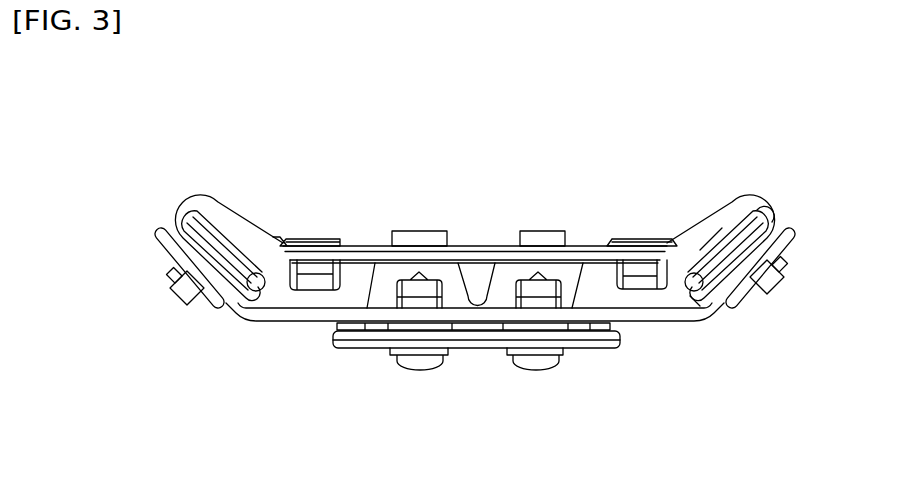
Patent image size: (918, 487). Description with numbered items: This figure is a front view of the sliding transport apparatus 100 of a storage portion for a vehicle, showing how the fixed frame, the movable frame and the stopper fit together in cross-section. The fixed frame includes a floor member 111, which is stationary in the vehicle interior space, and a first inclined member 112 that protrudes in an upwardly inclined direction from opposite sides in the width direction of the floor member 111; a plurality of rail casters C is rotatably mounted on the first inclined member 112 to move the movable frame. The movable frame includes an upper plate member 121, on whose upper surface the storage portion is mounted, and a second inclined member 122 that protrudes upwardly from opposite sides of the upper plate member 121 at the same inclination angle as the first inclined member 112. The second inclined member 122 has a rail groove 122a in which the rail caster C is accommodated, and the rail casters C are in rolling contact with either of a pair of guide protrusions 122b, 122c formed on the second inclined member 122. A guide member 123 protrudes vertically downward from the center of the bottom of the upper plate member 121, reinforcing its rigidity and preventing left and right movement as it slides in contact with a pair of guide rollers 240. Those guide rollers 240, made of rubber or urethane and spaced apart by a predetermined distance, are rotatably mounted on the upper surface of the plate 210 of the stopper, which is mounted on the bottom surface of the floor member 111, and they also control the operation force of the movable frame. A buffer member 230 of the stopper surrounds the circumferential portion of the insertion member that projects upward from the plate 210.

The sliding transport apparatus 100 is at (604, 124).
The floor member 111 is at (293, 316).
The first inclined member 112 is at (172, 246).
The upper plate member 121 is at (370, 248).
The second inclined member 122 is at (249, 217).
The rail groove 122a is at (708, 240).
The guide protrusion 122b is at (767, 217).
The guide protrusion 122c is at (697, 322).
The guide member 123 is at (478, 277).
The plate 210 is at (481, 357).
The buffer member 230 is at (418, 231).
The guide rollers 240 is at (573, 292).
The rail caster C is at (740, 293).